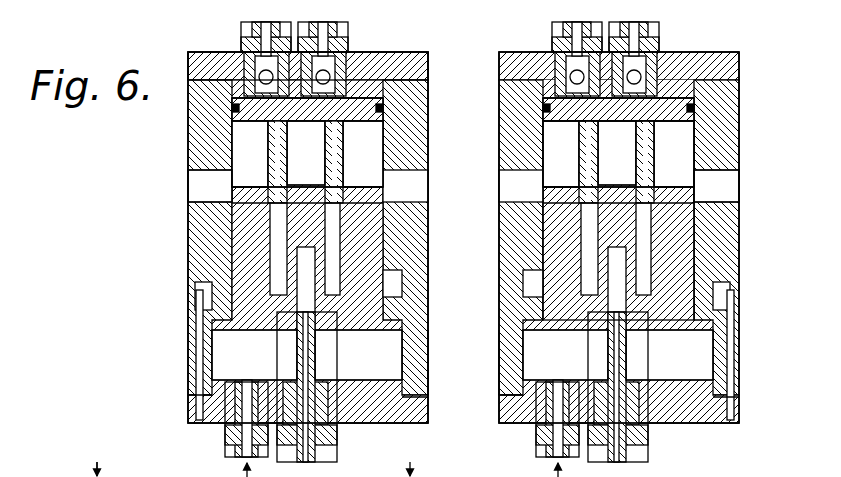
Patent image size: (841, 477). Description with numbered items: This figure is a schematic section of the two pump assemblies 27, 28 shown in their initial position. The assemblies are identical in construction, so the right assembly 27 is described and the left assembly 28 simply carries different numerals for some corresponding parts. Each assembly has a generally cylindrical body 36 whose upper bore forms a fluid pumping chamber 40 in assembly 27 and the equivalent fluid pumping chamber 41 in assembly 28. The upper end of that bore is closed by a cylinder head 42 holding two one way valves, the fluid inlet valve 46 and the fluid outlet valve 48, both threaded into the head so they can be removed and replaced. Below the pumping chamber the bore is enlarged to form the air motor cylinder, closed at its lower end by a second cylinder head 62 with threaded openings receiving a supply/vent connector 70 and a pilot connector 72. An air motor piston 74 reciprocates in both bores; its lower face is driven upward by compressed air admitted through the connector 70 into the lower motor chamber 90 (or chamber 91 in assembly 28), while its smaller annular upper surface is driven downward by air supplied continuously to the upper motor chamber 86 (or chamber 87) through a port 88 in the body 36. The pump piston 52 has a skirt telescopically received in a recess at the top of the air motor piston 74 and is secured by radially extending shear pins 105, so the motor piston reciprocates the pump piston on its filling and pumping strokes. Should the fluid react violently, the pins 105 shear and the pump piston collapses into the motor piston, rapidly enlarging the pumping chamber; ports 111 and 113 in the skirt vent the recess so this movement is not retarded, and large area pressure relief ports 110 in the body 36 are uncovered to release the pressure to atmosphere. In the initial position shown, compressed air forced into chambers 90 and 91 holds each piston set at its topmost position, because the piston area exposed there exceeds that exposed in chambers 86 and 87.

The pump assembly 27 is at (790, 90).
The pump assembly 28 is at (184, 161).
The body 36 is at (496, 352).
The fluid pumping chamber 40 is at (682, 97).
The fluid pumping chamber 41 is at (371, 97).
The cylinder head 42 is at (421, 64).
The fluid inlet valve 46 is at (246, 40).
The fluid outlet valve 48 is at (337, 40).
The pump piston 52 is at (366, 118).
The cylinder head 62 is at (497, 410).
The supply/vent connector 70 is at (233, 441).
The pilot connector 72 is at (331, 438).
The air motor piston 74 is at (349, 326).
The upper motor chamber 86 is at (698, 278).
The upper motor chamber 87 is at (399, 284).
The port 88 is at (197, 293).
The lower motor chamber 90 is at (676, 374).
The lower motor chamber 91 is at (262, 372).
The shear pins 105 is at (251, 186).
The pressure relief ports 110 is at (204, 187).
The port 111 is at (337, 161).
The port 113 is at (335, 135).